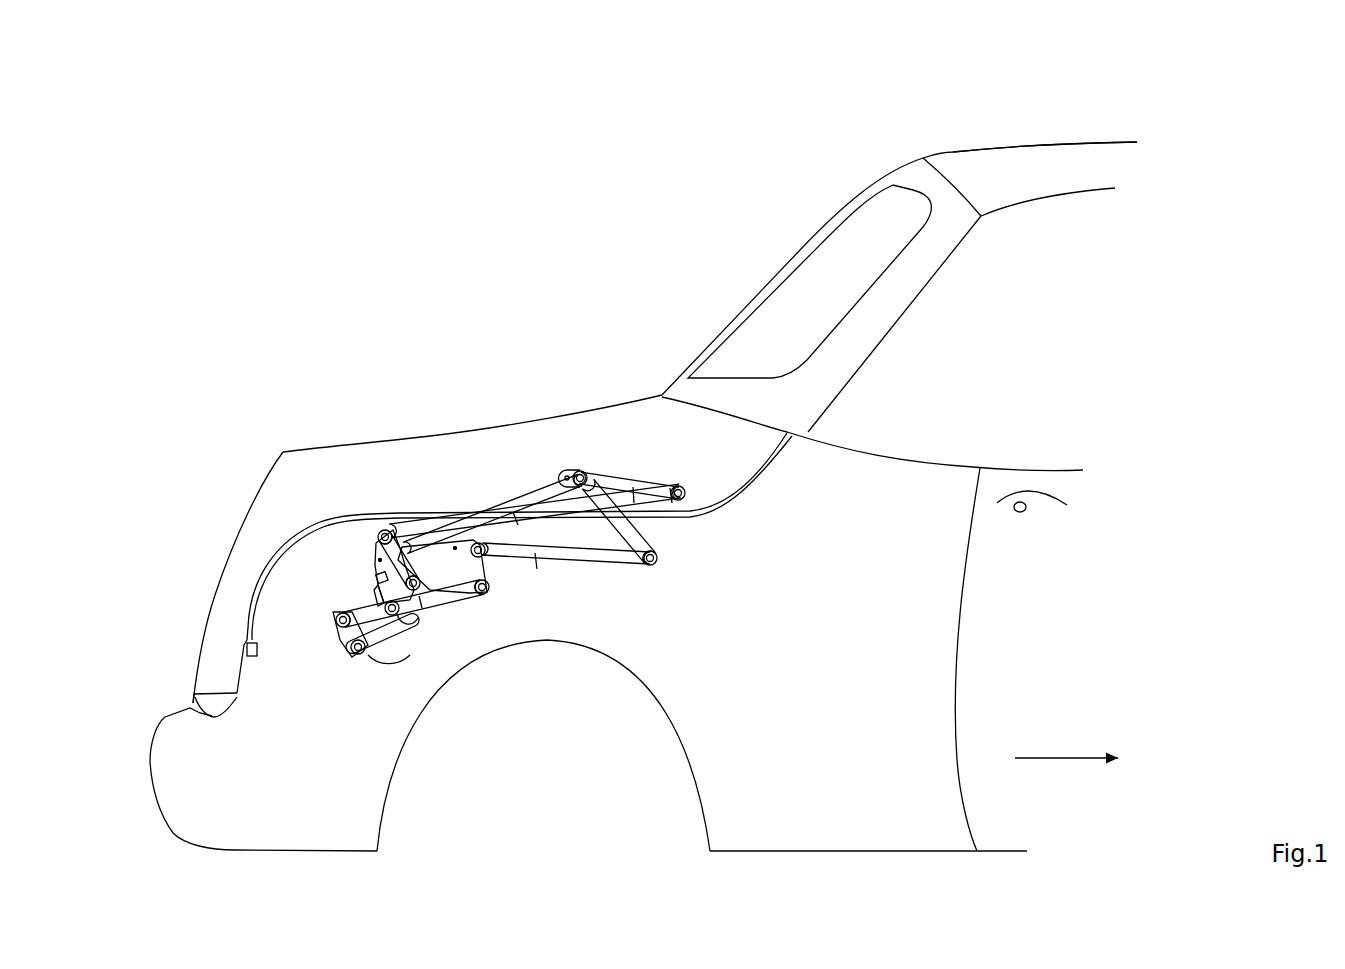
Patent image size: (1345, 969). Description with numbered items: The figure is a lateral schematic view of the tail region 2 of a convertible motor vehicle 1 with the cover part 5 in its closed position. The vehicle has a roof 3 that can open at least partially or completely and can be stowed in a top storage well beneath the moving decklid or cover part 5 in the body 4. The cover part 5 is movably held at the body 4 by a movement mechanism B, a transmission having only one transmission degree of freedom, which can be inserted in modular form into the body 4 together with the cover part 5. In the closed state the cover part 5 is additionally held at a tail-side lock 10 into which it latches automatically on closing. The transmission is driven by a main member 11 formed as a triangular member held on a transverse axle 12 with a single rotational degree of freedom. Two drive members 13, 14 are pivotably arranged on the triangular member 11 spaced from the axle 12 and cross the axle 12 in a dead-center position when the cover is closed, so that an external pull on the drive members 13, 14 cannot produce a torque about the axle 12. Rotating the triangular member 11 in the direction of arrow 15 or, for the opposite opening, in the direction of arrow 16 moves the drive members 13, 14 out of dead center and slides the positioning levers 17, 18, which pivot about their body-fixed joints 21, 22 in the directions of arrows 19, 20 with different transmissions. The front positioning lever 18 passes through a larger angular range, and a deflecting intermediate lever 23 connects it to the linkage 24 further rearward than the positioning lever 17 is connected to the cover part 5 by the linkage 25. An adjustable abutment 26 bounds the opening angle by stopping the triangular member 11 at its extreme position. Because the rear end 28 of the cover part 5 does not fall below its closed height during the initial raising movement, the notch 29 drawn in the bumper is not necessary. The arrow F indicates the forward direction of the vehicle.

The motor vehicle 1 is at (733, 177).
The tail region 2 is at (553, 293).
The roof 3 is at (944, 144).
The body 4 is at (760, 655).
The cover part 5 is at (517, 442).
The tail-side lock 10 is at (255, 625).
The main member 11 is at (352, 639).
The axle 12 is at (400, 613).
The drive member 13 is at (441, 601).
The drive member 14 is at (377, 631).
The arrow 15 is at (357, 571).
The arrow 16 is at (411, 658).
The positioning lever 17 is at (440, 526).
The front positioning lever 18 is at (538, 562).
The arrow 19 is at (404, 526).
The arrow 20 is at (503, 545).
The joint 21 is at (397, 528).
The joint 22 is at (478, 543).
The deflecting intermediate lever 23 is at (642, 537).
The linkage 24 is at (583, 477).
The linkage 25 is at (681, 493).
The adjustable abutment 26 is at (382, 580).
The rear end 28 is at (198, 680).
The notch 29 is at (213, 704).
The movement mechanism B is at (592, 606).
The forward direction F is at (1062, 760).